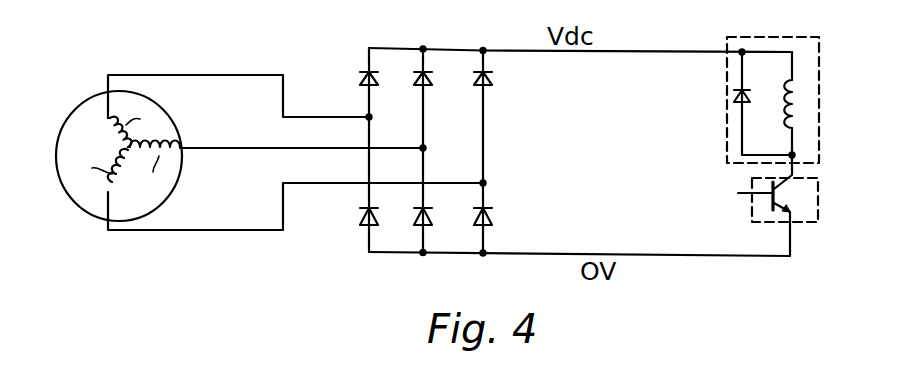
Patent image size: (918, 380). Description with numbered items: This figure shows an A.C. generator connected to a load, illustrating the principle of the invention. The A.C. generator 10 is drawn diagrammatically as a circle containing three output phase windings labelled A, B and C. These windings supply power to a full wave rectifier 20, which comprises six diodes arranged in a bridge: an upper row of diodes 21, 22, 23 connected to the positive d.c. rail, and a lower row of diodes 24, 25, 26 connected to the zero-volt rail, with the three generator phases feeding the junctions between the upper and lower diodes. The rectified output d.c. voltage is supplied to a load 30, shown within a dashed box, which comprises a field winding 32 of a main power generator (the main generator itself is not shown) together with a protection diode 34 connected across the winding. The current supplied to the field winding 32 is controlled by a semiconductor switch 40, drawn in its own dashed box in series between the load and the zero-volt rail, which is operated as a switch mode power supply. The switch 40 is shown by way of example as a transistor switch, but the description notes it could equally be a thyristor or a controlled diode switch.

The A.C. generator 10 is at (88, 92).
The full wave rectifier 20 is at (551, 165).
The diode 21 is at (362, 73).
The diode 22 is at (414, 85).
The diode 23 is at (494, 77).
The diode 24 is at (359, 211).
The diode 25 is at (418, 228).
The diode 26 is at (493, 222).
The load 30 is at (748, 82).
The field winding 32 is at (780, 105).
The protection diode 34 is at (735, 98).
The semiconductor switch 40 is at (810, 218).